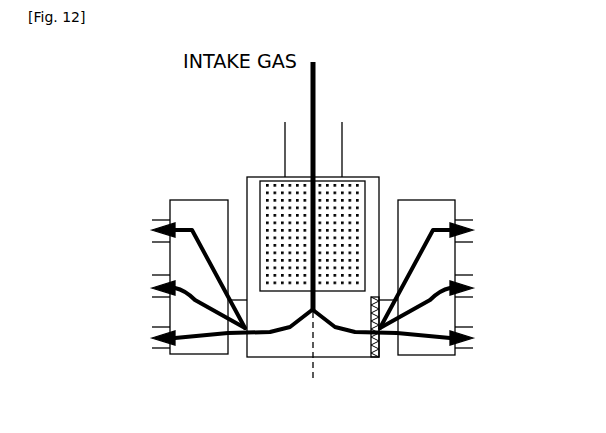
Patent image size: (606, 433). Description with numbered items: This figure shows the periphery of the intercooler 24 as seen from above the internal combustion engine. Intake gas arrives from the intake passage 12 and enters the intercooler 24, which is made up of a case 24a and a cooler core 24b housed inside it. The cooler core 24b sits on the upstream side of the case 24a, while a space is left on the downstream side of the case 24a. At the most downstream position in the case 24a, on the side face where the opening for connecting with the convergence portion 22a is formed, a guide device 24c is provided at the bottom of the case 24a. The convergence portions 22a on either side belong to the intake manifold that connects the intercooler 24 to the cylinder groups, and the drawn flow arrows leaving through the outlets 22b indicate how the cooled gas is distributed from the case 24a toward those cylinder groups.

The intake passage 12 is at (285, 136).
The intercooler 24 is at (227, 167).
The case 24a is at (375, 177).
The cooler core 24b is at (350, 178).
The guide device 24c is at (371, 357).
The convergence portion 22a is at (247, 365).
The outlet openings 22b is at (153, 223).